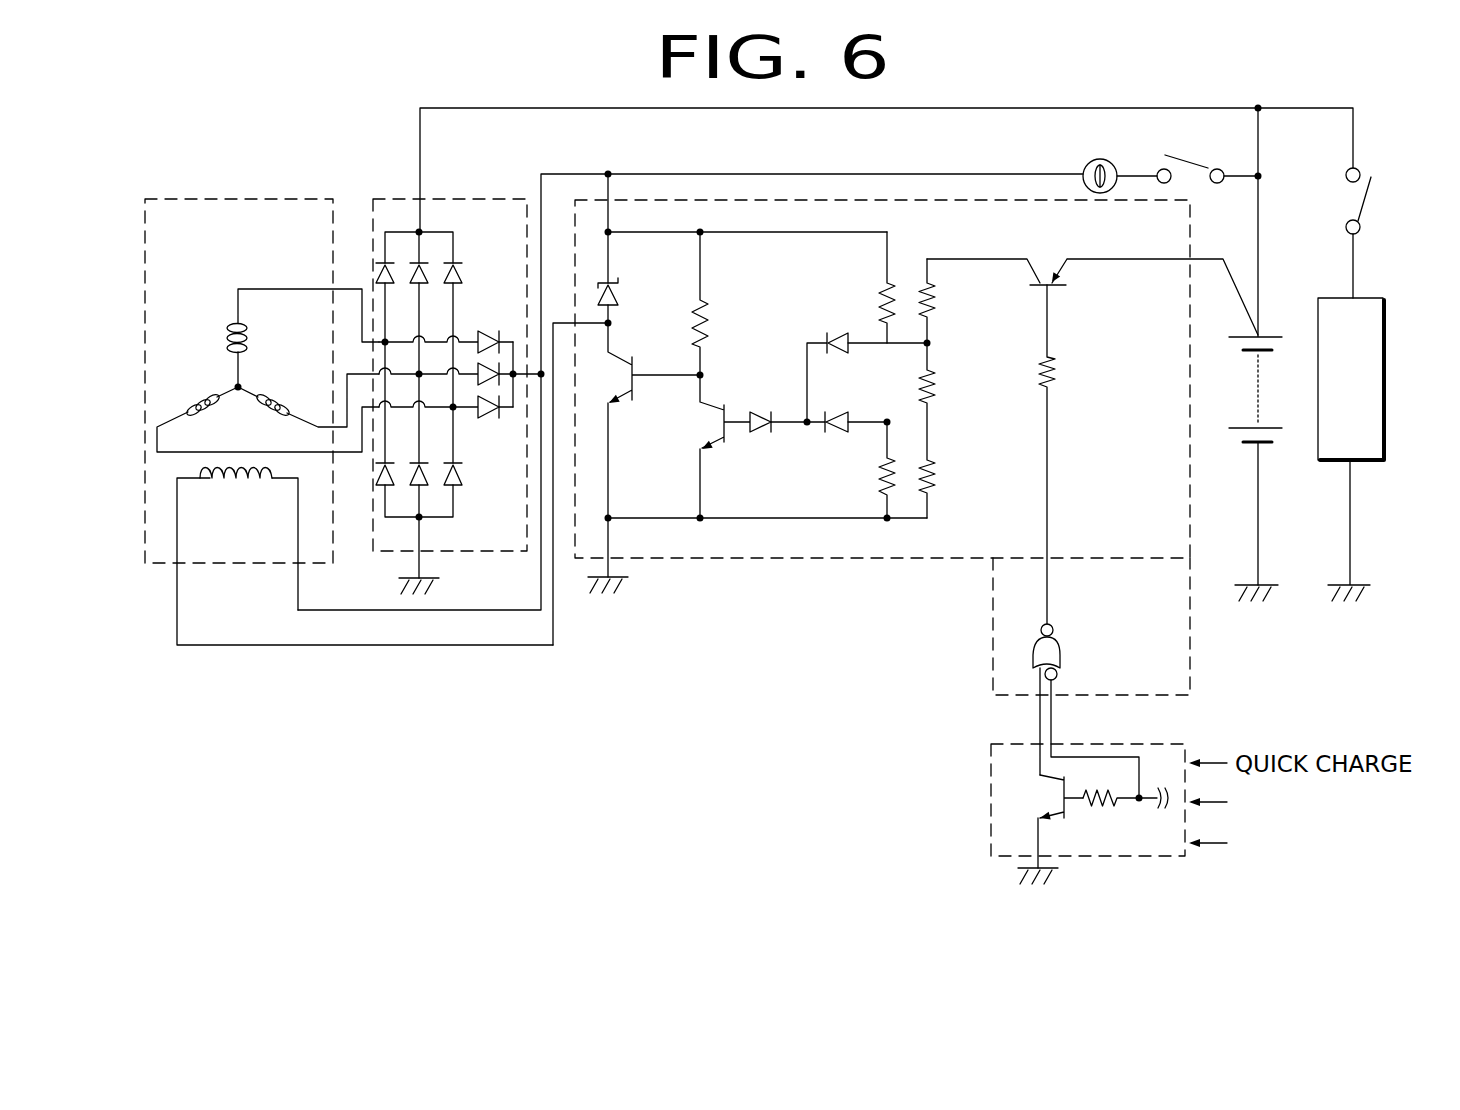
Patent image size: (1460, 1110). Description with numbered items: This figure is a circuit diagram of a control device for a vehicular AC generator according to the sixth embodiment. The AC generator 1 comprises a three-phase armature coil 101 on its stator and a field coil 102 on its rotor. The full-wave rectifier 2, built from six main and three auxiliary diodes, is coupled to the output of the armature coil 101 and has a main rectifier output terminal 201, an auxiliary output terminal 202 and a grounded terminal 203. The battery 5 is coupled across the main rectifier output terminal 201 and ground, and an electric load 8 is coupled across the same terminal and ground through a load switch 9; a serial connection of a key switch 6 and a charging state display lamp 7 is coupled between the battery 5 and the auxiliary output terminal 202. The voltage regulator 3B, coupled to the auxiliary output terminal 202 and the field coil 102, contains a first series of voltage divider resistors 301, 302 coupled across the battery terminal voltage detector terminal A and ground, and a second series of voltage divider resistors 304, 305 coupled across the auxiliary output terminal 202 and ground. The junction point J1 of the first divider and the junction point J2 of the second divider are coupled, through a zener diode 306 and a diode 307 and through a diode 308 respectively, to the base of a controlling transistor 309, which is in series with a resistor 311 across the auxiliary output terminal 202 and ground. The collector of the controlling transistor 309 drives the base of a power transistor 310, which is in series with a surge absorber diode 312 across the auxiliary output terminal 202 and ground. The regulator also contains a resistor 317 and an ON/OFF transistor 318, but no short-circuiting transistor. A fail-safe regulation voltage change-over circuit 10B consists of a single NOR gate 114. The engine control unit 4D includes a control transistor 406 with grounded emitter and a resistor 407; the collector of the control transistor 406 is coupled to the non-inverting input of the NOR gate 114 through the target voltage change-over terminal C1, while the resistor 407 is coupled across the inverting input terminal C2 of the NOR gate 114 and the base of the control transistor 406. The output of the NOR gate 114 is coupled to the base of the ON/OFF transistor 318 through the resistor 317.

The AC generator 1 is at (243, 198).
The three-phase armature coil 101 is at (223, 327).
The field coil 102 is at (233, 483).
The full-wave rectifier 2 is at (466, 198).
The main rectifier output terminal 201 is at (421, 232).
The auxiliary output terminal 202 is at (520, 380).
The grounded terminal 203 is at (421, 517).
The voltage regulator 3B is at (763, 560).
The voltage divider resistor 301 is at (933, 305).
The voltage divider resistor 302 is at (940, 383).
The voltage divider resistor 304 is at (876, 300).
The voltage divider resistor 305 is at (878, 480).
The zener diode 306 is at (760, 412).
The diode 307 is at (832, 340).
The diode 308 is at (838, 412).
The controlling transistor 309 is at (716, 440).
The power transistor 310 is at (628, 398).
The resistor 311 is at (715, 317).
The surge absorber diode 312 is at (650, 270).
The resistor 317 is at (1040, 370).
The ON/OFF transistor 318 is at (1046, 280).
The junction point J1 is at (929, 342).
The junction point J2 is at (887, 422).
The battery terminal voltage detector terminal A is at (1213, 258).
The fail-safe regulation voltage change-over circuit 10B is at (1000, 657).
The NOR gate 114 is at (1060, 650).
The target voltage change-over terminal C1 is at (1036, 722).
The target voltage change-over terminal C2 is at (1054, 718).
The engine control unit 4D is at (990, 835).
The control transistor 406 is at (1050, 800).
The resistor 407 is at (1112, 810).
The battery 5 is at (1250, 380).
The key switch 6 is at (1195, 162).
The charging state display lamp 7 is at (1086, 162).
The electric load 8 is at (1385, 388).
The load switch 9 is at (1371, 200).